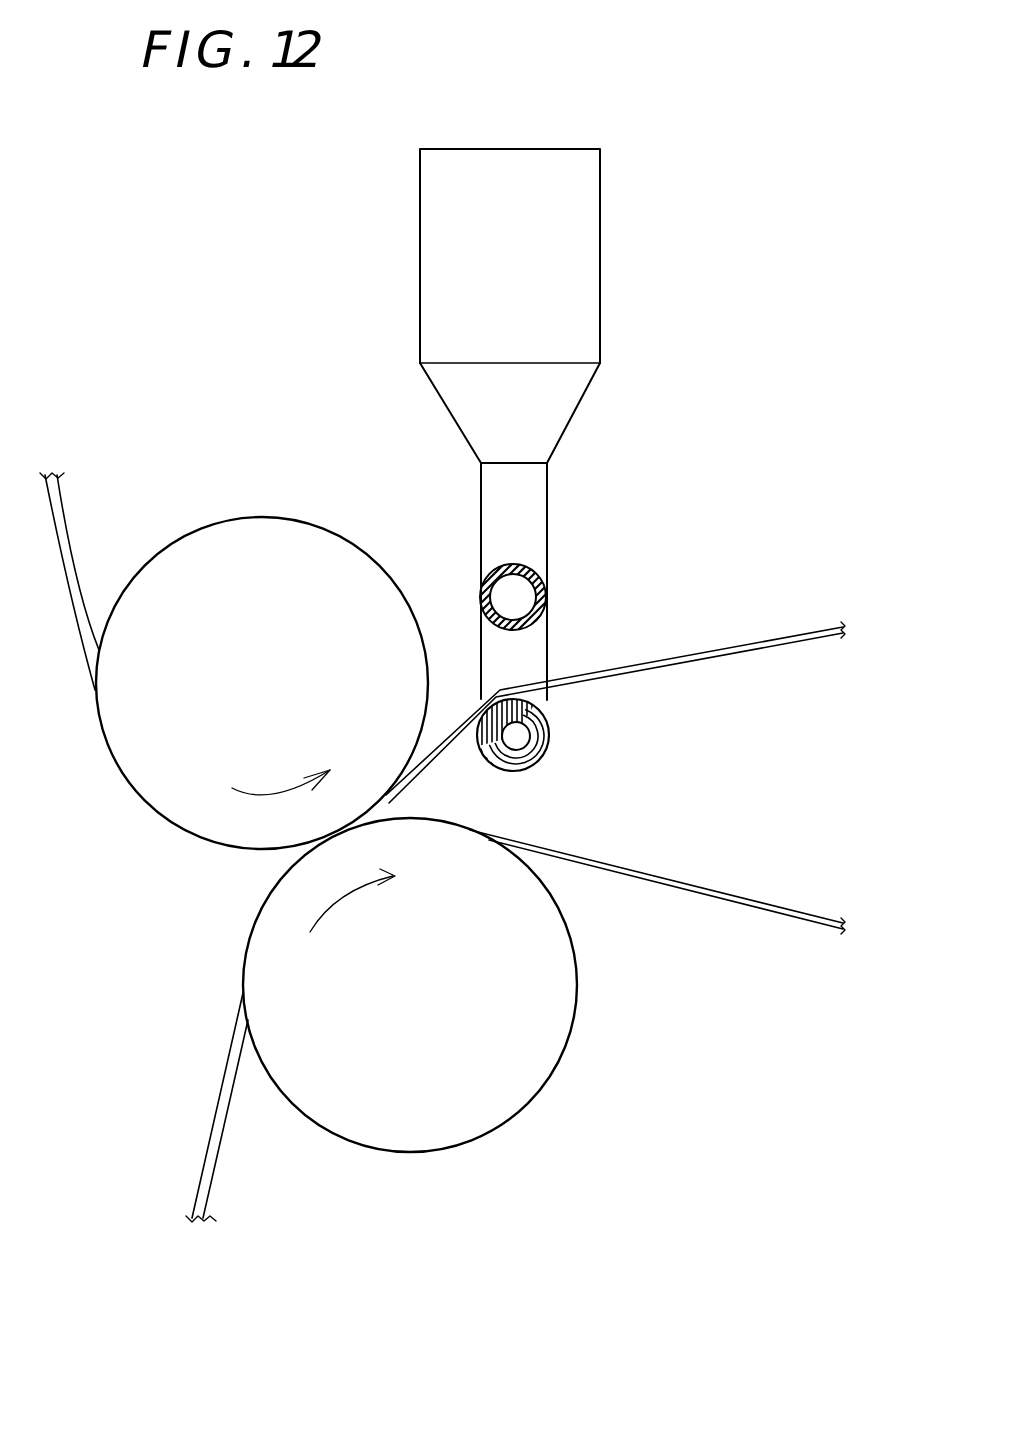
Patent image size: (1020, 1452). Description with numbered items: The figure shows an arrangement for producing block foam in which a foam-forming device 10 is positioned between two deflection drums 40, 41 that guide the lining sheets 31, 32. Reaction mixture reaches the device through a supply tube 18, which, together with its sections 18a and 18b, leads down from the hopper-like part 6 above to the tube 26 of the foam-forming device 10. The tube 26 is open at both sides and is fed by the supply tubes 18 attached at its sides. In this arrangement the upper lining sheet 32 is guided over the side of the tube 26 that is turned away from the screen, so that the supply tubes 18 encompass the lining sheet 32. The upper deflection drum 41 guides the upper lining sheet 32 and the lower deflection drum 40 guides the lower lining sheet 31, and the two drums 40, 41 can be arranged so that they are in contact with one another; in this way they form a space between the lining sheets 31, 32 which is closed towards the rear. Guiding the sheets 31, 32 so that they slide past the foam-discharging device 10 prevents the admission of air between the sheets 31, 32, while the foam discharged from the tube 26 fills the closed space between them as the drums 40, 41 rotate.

The hopper 6 is at (616, 225).
The supply tube 18 is at (545, 650).
The metering roller 18a is at (533, 570).
The upper chute section 18b is at (542, 480).
The foam-forming device 10 is at (566, 726).
The tube 26 is at (477, 742).
The deflection drum 41 is at (372, 570).
The deflection drum 40 is at (572, 975).
The upper lining sheet 32 is at (757, 650).
The lining sheet 31 is at (763, 903).